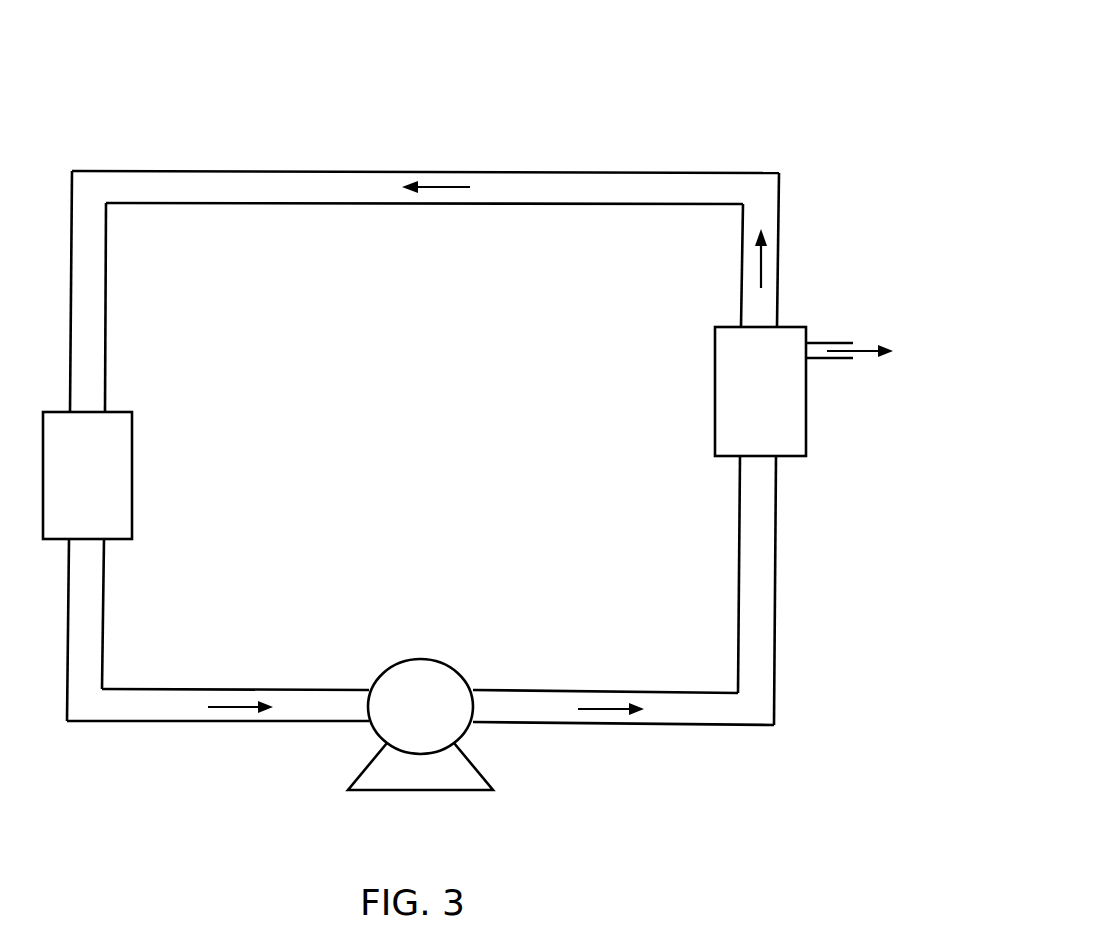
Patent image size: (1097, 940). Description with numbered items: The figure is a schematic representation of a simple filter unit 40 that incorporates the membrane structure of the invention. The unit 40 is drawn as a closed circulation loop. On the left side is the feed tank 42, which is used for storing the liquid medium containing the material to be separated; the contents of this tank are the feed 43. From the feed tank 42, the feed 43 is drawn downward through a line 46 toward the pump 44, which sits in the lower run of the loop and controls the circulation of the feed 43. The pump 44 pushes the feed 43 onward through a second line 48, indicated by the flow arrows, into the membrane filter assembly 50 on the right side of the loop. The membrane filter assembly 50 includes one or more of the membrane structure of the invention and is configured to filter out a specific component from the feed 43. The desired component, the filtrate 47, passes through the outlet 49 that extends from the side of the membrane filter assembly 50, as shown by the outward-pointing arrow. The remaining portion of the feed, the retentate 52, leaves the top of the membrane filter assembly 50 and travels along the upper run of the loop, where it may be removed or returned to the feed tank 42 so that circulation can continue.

The filter unit 40 is at (653, 51).
The feed tank 42 is at (133, 476).
The feed 43 is at (100, 453).
The pump 44 is at (420, 658).
The line 46 is at (102, 617).
The filtrate 47 is at (858, 343).
The line 48 is at (622, 692).
The outlet 49 is at (830, 361).
The membrane filter assembly 50 is at (714, 390).
The retentate 52 is at (742, 266).